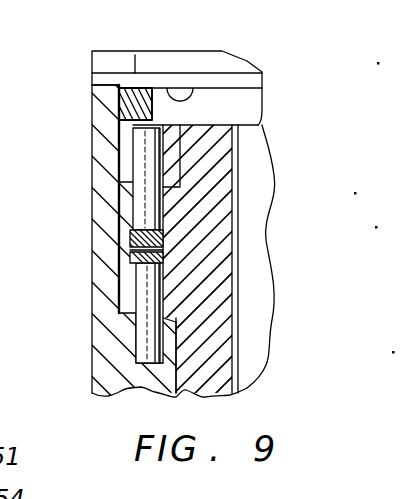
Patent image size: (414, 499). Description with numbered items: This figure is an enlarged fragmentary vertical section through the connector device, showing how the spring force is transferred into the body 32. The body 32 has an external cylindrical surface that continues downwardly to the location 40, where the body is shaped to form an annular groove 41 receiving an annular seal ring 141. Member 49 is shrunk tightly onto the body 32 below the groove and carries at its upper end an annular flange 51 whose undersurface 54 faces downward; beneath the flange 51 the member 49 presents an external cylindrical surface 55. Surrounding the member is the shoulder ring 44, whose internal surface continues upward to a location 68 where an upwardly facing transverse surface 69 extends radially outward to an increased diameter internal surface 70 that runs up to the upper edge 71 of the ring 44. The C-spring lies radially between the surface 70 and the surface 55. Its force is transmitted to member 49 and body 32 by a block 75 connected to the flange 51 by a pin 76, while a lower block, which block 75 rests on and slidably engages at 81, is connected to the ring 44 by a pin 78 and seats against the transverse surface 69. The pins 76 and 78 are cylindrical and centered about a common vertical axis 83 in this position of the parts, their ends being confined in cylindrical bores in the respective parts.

The body 32 is at (100, 58).
The location 40 is at (92, 78).
The upper edge 71 is at (135, 55).
The annular seal ring 141 is at (130, 97).
The groove 41 is at (193, 93).
The annular flange 51 is at (112, 128).
The transverse surface 54 is at (92, 183).
The increased diameter internal surface 70 is at (119, 305).
The member 49 is at (226, 155).
The common vertical axis 83 is at (176, 188).
The external cylindrical surface 55 is at (186, 238).
The location 68 is at (183, 319).
The pin 76 is at (137, 147).
The upwardly facing transverse surface 69 is at (147, 340).
The block 75 is at (128, 205).
The sliding engagement 81 is at (125, 265).
The pin 78 is at (92, 365).
The shoulder ring 44 is at (131, 385).